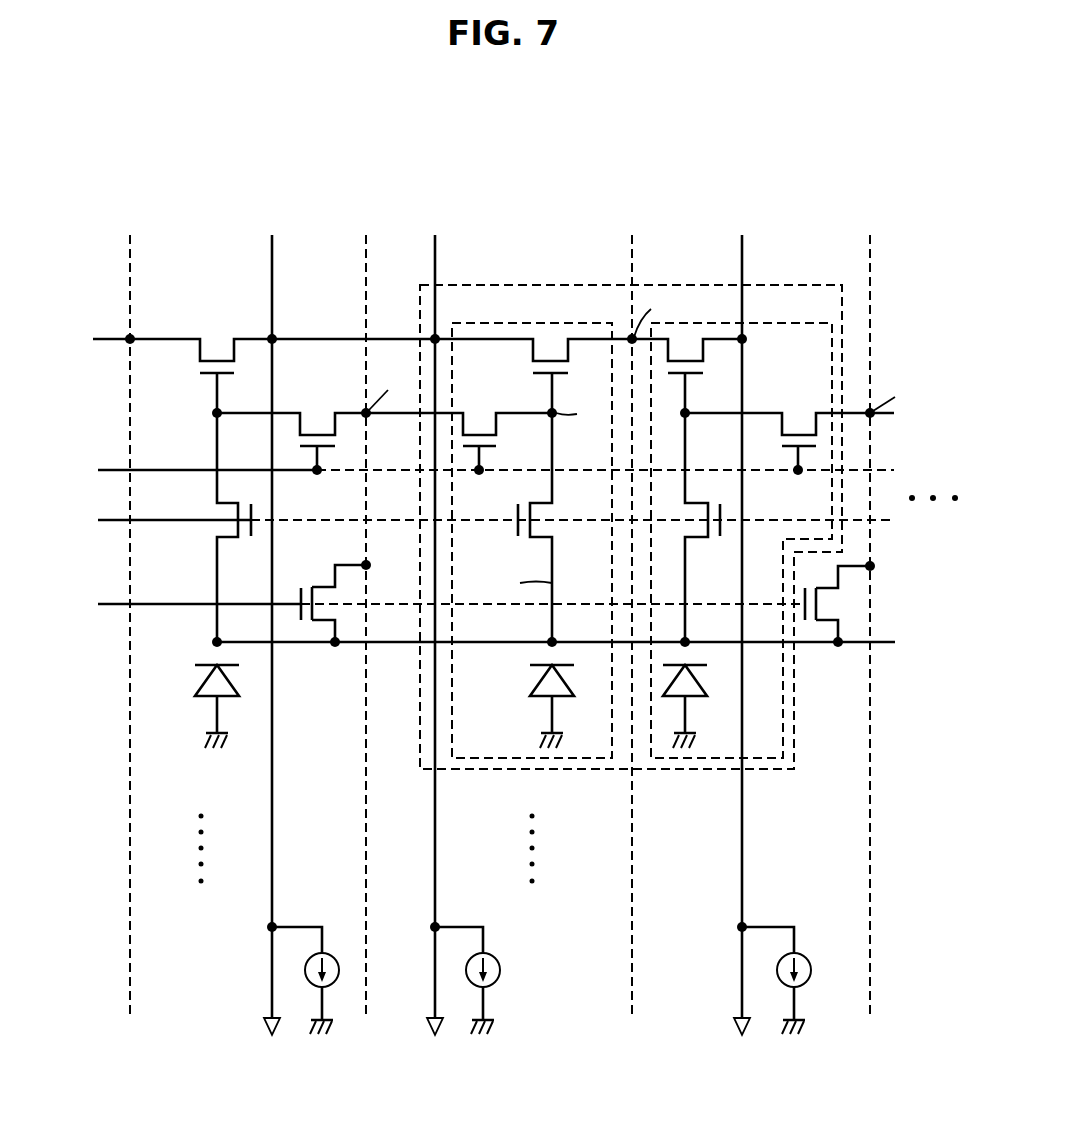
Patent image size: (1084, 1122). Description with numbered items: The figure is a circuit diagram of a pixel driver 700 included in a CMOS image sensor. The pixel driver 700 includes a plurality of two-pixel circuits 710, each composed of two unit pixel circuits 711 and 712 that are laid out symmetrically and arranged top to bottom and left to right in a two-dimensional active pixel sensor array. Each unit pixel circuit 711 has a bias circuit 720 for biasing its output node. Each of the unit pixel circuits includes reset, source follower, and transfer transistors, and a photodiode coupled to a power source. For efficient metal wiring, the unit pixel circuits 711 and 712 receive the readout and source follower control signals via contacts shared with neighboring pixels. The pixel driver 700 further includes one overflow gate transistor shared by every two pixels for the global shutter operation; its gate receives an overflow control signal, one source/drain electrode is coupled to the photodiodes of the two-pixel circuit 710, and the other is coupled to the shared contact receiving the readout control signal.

The pixel driver 700 is at (811, 166).
The 2-pixel circuit 710 is at (655, 284).
The unit pixel circuit 711 is at (547, 322).
The unit pixel circuit 712 is at (762, 323).
The bias circuit 720 is at (500, 970).